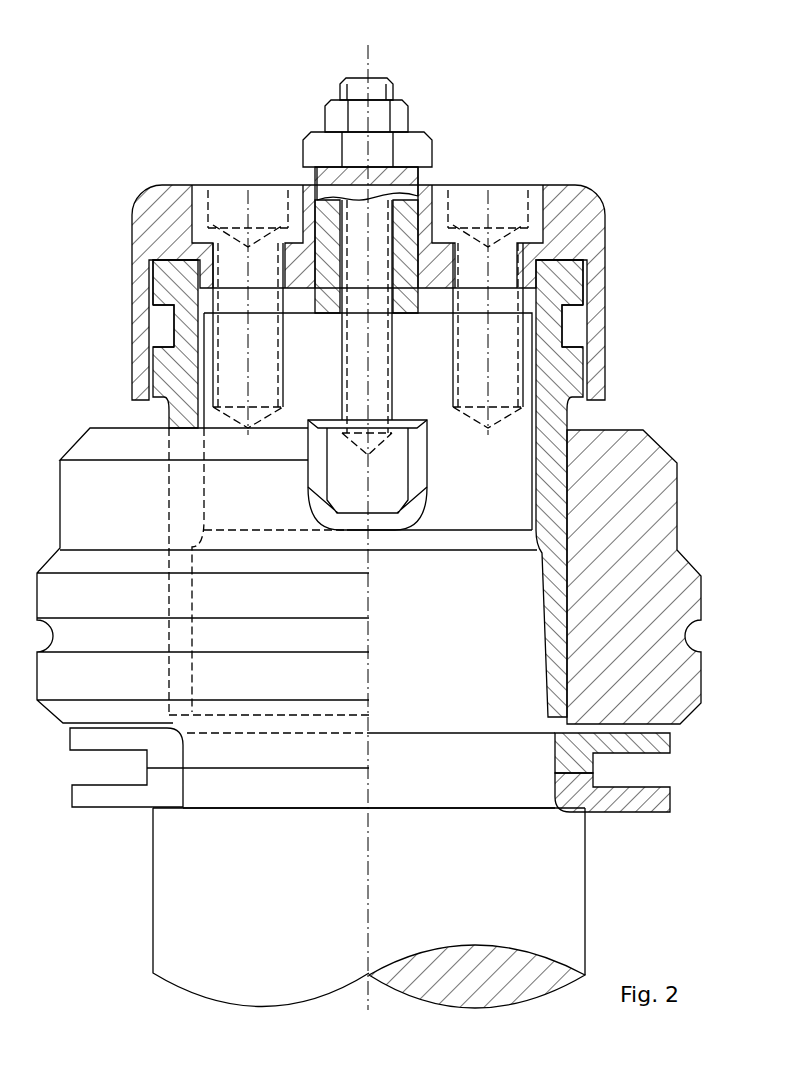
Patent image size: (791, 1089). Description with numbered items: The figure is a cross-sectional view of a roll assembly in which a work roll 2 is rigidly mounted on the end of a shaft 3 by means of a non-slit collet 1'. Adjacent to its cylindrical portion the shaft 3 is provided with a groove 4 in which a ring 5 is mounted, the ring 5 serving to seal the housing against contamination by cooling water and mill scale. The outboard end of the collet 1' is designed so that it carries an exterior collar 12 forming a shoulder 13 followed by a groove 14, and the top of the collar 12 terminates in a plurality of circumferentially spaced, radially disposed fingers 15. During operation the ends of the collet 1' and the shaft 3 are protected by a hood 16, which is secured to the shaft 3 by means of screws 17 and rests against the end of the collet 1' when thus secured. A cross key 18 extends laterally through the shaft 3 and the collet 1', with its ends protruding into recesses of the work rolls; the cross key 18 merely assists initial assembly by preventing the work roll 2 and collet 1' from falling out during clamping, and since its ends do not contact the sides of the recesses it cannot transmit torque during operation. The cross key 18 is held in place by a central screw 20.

The collet 1' is at (442, 466).
The work roll 2 is at (650, 500).
The shaft 3 is at (220, 878).
The groove 4 is at (507, 782).
The ring 5 is at (643, 812).
The collar 12 is at (572, 370).
The shoulder 13 is at (563, 347).
The groove 14 is at (563, 310).
The fingers 15 is at (565, 272).
The hood 16 is at (153, 212).
The screws 17 is at (233, 212).
The cross key 18 is at (348, 470).
The central screw 20 is at (357, 90).